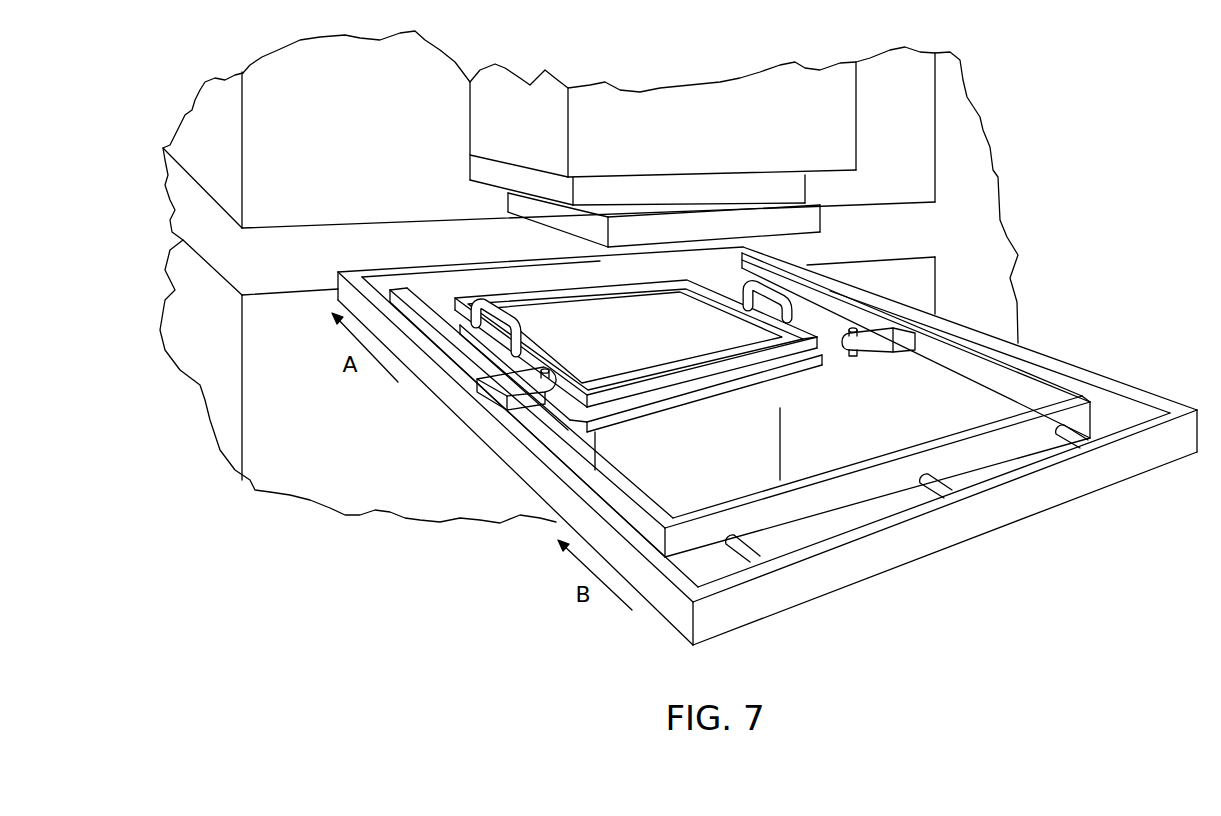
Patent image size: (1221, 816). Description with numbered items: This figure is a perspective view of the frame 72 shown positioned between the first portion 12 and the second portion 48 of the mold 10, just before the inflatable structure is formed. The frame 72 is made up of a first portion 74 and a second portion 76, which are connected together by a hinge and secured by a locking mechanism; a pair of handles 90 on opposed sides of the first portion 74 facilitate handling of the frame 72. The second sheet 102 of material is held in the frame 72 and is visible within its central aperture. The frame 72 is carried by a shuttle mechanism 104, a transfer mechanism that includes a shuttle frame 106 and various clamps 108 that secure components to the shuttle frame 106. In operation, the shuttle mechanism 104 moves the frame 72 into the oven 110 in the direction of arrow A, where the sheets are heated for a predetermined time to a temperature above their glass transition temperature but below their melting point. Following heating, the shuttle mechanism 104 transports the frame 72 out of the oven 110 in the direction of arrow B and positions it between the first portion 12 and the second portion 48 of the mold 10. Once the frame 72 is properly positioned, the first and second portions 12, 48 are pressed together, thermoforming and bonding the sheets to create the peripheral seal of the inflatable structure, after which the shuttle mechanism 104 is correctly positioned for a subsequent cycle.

The mold 10 is at (666, 103).
The first portion of mold 12 is at (817, 208).
The second portion of mold 48 is at (742, 395).
The frame 72 is at (540, 294).
The first portion of frame 74 is at (643, 372).
The second portion of frame 76 is at (790, 336).
The handle 90 is at (518, 335).
The second sheet 102 is at (637, 337).
The shuttle mechanism 104 is at (993, 545).
The shuttle frame 106 is at (1017, 385).
The clamp 108 is at (505, 388).
The oven 110 is at (589, 277).